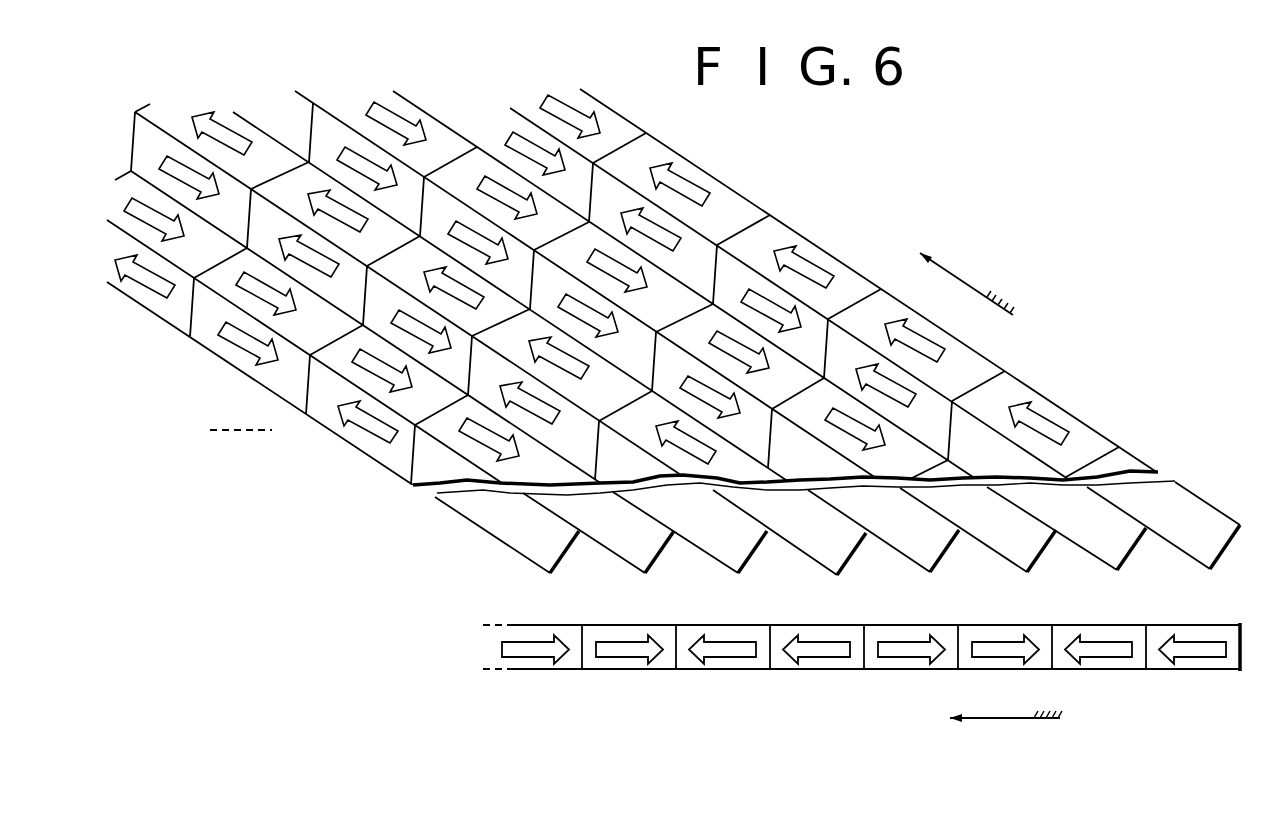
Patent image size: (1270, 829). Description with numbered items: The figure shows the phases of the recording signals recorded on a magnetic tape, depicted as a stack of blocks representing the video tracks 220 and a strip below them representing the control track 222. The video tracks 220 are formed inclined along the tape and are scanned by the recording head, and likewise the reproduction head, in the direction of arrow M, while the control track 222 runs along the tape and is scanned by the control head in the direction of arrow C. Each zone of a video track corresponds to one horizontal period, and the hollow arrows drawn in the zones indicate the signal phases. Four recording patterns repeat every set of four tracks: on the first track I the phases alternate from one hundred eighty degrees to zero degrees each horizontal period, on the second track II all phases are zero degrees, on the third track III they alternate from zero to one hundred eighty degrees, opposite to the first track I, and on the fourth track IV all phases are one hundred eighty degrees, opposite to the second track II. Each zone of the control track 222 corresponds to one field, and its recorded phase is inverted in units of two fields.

The video tracks 220 is at (810, 212).
The control track 222 is at (715, 670).
The first track I is at (879, 530).
The second track II is at (789, 530).
The third track III is at (697, 531).
The fourth track IV is at (976, 528).
The arrow M is at (955, 273).
The arrow C is at (993, 719).